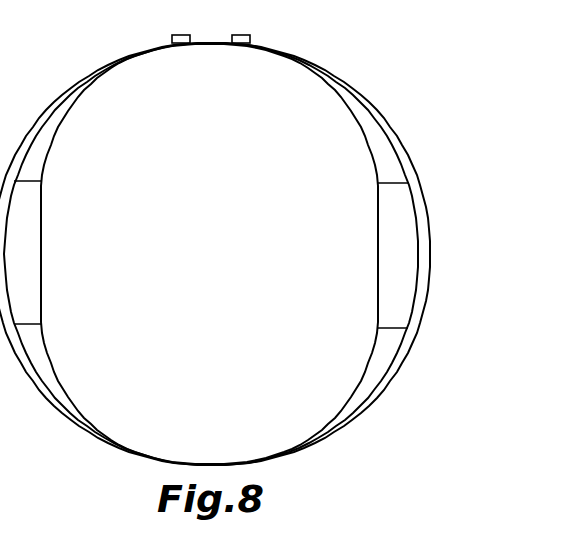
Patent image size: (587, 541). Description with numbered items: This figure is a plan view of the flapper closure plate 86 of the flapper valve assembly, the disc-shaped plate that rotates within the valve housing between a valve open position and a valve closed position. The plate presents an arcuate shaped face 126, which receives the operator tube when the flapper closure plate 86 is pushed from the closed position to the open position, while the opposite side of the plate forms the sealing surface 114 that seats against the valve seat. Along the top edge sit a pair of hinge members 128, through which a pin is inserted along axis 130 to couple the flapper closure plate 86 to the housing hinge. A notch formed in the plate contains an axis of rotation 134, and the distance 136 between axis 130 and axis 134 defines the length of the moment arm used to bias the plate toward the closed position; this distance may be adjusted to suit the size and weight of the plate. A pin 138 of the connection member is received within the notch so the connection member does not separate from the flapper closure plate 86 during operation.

The flapper closure plate 86 is at (231, 259).
The sealing surface 114 is at (387, 377).
The arcuate shaped face 126 is at (272, 412).
The hinge members 128 is at (251, 24).
The axis 130 is at (6, 22).
The axis of rotation 134 is at (6, 88).
The distance 136 is at (0, 43).
The pin 138 is at (0, 478).